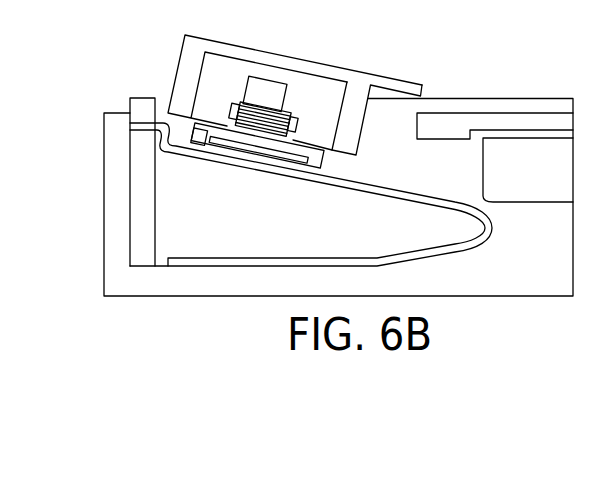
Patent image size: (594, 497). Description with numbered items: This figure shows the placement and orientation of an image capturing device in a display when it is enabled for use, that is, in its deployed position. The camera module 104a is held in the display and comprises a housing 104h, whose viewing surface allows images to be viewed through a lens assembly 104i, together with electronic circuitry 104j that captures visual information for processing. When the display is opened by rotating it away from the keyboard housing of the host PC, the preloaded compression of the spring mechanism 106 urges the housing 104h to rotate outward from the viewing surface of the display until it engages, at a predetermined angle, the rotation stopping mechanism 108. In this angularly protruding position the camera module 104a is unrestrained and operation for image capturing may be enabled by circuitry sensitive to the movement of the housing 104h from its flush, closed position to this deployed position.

The camera module 104a is at (222, 80).
The housing 104h is at (358, 90).
The lens assembly 104i is at (270, 87).
The electronic circuitry 104j is at (182, 143).
The spring mechanism 106 is at (210, 260).
The rotation stopping mechanism 108 is at (147, 123).